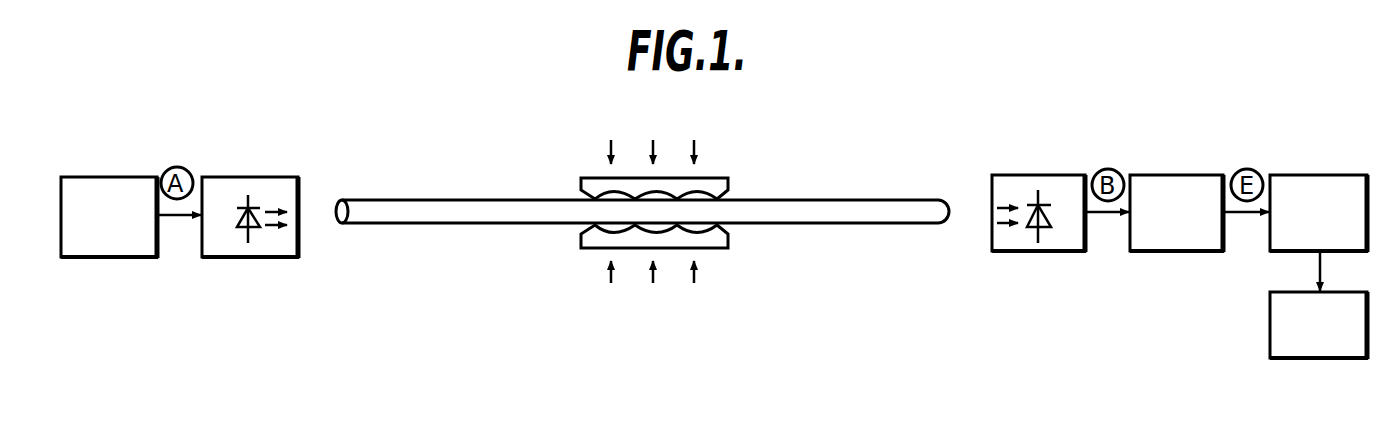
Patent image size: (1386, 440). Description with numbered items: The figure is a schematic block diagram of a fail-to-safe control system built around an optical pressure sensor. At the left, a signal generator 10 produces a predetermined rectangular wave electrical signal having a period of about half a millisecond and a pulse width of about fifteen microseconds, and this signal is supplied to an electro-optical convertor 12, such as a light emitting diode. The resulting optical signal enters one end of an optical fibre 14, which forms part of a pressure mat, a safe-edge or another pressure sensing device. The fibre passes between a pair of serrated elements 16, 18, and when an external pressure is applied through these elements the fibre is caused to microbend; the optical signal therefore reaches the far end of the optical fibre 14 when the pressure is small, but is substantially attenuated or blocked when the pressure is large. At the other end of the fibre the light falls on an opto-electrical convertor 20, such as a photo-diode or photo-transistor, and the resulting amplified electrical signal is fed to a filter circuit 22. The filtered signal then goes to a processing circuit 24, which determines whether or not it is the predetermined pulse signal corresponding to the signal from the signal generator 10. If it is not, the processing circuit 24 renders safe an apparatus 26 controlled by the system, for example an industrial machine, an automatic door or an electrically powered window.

The signal generator 10 is at (104, 257).
The electro-optical convertor 12 is at (247, 257).
The optical fibre 14 is at (440, 218).
The serrated element 16 is at (722, 186).
The serrated element 18 is at (728, 245).
The opto-electrical convertor 20 is at (1027, 252).
The filter circuit 22 is at (1163, 252).
The processing circuit 24 is at (1332, 175).
The apparatus 26 is at (1273, 329).